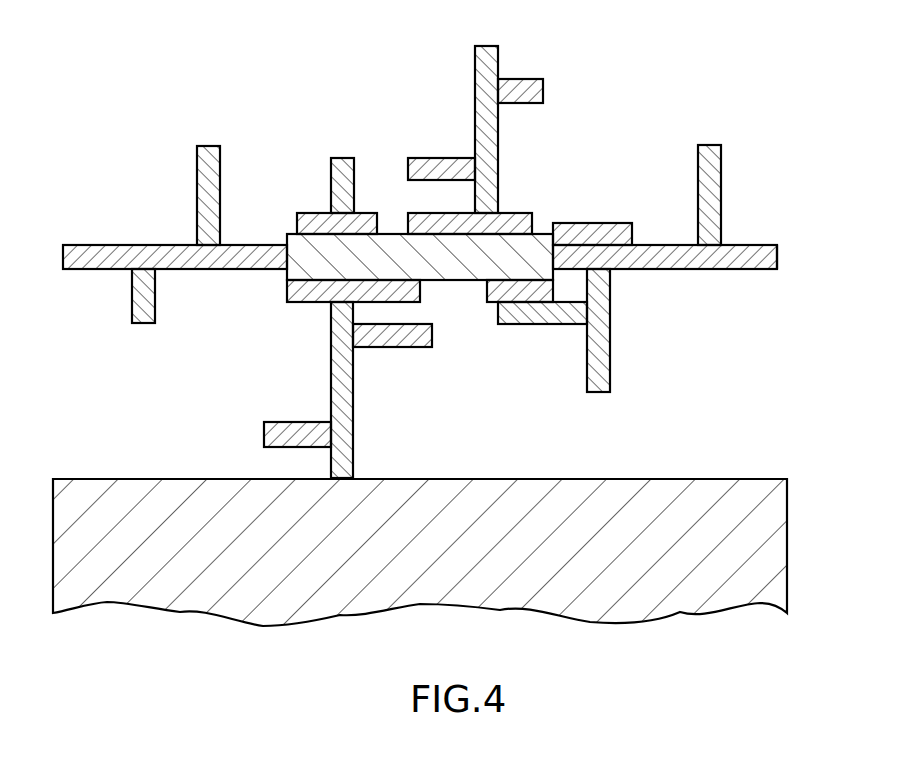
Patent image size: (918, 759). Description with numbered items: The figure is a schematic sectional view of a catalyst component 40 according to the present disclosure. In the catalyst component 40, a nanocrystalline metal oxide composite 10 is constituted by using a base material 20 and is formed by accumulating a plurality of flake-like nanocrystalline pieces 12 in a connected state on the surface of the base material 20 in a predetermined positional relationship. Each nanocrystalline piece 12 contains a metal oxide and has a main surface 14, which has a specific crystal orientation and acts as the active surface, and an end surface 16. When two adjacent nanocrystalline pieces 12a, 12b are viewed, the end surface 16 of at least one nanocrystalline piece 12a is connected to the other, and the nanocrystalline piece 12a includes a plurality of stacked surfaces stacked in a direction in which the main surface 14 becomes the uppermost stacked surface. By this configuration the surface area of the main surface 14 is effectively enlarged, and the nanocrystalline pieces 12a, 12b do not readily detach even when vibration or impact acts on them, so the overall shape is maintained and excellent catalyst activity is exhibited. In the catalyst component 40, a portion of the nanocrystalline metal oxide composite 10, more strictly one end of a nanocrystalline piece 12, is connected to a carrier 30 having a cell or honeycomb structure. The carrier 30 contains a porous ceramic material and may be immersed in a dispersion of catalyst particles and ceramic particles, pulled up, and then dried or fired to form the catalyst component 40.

The nanocrystalline metal oxide composite 10 is at (484, 98).
The nanocrystalline piece 12 is at (90, 246).
The nanocrystalline piece 12a is at (543, 81).
The nanocrystalline piece 12b is at (477, 53).
The main surface 14 is at (747, 246).
The end surface 16 is at (777, 257).
The base material 20 is at (328, 259).
The carrier 30 is at (658, 495).
The catalyst component 40 is at (655, 104).